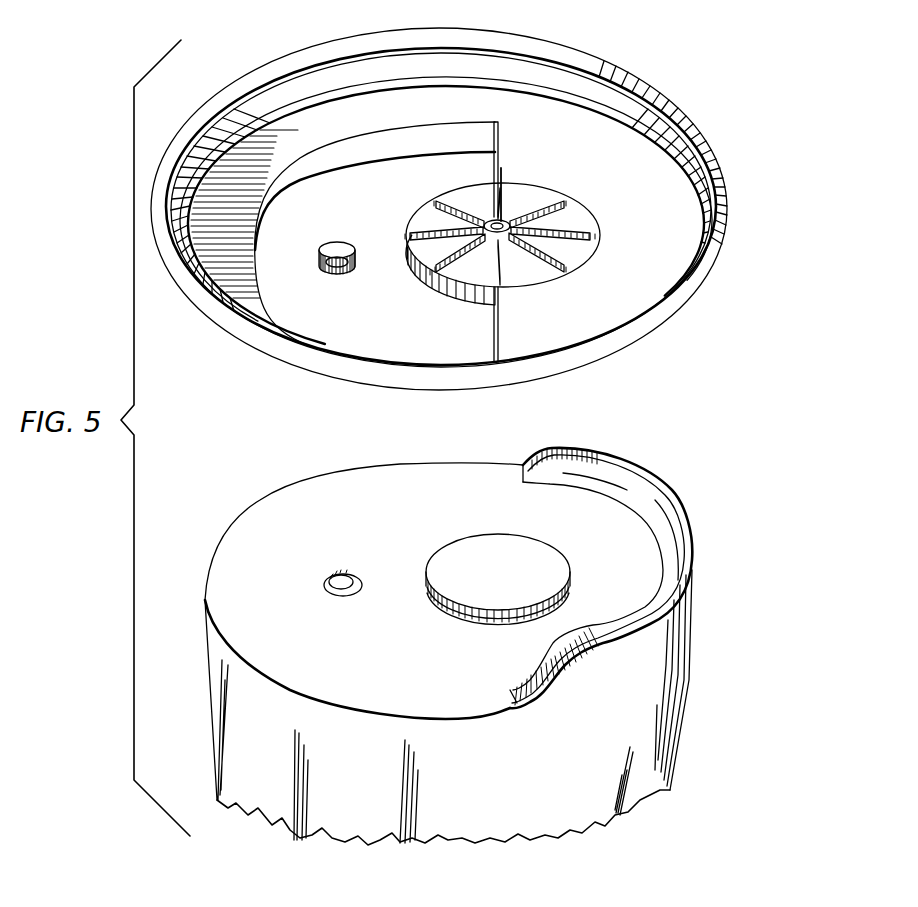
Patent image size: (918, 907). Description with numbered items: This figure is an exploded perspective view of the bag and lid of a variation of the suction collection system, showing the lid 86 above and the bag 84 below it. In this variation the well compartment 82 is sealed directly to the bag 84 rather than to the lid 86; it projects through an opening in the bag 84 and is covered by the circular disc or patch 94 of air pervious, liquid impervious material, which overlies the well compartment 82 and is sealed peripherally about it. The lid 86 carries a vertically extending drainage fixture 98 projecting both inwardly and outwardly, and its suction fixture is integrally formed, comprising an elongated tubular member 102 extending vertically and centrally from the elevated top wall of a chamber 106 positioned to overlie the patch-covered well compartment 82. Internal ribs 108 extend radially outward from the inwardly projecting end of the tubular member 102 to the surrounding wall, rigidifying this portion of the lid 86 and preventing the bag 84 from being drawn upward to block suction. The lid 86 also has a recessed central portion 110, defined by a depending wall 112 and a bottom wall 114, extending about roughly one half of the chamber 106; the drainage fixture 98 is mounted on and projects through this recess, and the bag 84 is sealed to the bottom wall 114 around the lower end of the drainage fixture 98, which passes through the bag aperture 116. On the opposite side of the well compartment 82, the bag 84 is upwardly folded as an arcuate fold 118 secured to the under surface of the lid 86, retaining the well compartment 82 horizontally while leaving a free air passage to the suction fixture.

The well compartment 82 is at (475, 633).
The bag 84 is at (307, 506).
The lid 86 is at (684, 91).
The circular disc or patch 94 is at (491, 588).
The drainage fixture 98 is at (341, 271).
The elongated tubular member 102 is at (503, 250).
The chamber 106 is at (528, 219).
The internal ribs 108 is at (584, 246).
The recessed central portion 110 is at (355, 350).
The depending wall 112 is at (410, 137).
The bottom wall 114 is at (368, 178).
The bag aperture 116 is at (344, 595).
The arcuate fold 118 is at (674, 512).